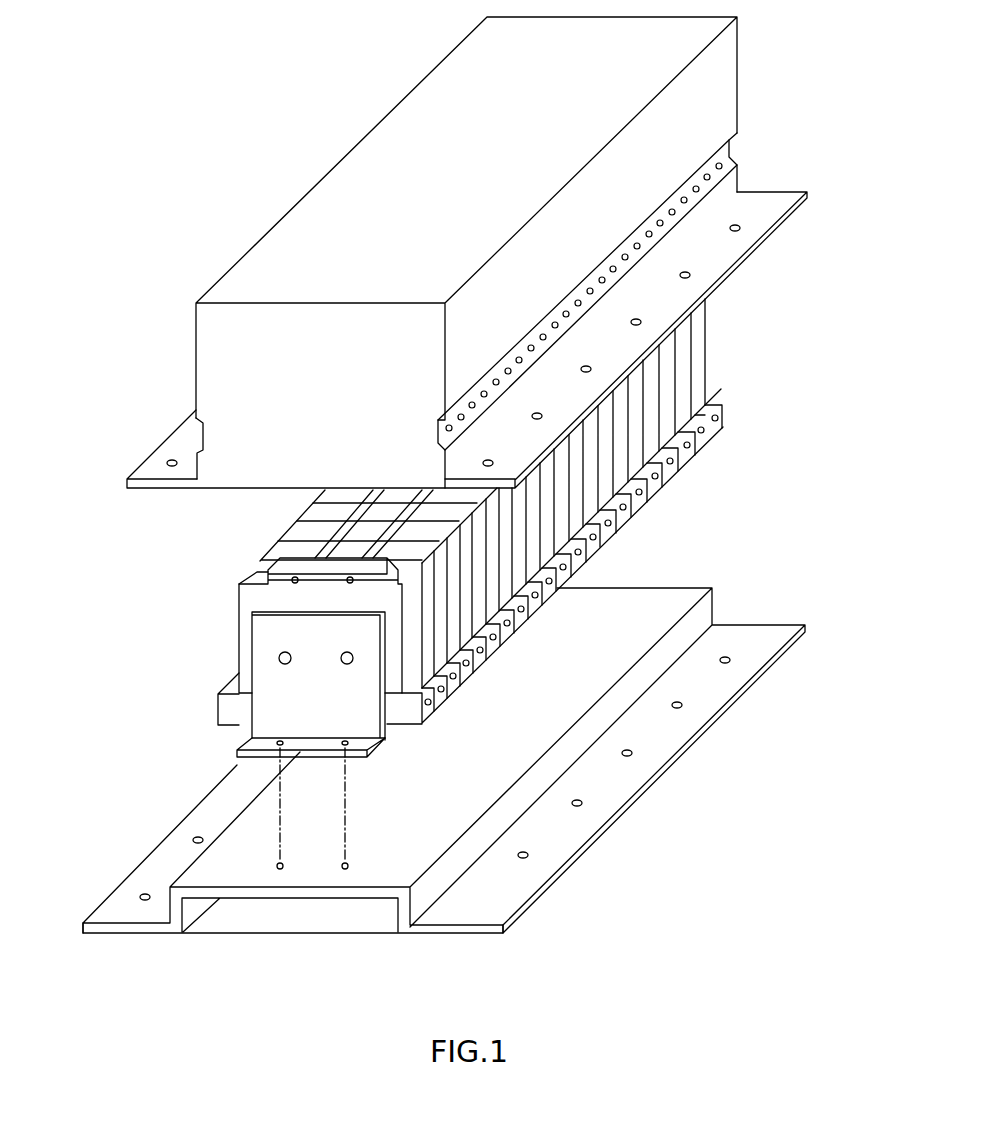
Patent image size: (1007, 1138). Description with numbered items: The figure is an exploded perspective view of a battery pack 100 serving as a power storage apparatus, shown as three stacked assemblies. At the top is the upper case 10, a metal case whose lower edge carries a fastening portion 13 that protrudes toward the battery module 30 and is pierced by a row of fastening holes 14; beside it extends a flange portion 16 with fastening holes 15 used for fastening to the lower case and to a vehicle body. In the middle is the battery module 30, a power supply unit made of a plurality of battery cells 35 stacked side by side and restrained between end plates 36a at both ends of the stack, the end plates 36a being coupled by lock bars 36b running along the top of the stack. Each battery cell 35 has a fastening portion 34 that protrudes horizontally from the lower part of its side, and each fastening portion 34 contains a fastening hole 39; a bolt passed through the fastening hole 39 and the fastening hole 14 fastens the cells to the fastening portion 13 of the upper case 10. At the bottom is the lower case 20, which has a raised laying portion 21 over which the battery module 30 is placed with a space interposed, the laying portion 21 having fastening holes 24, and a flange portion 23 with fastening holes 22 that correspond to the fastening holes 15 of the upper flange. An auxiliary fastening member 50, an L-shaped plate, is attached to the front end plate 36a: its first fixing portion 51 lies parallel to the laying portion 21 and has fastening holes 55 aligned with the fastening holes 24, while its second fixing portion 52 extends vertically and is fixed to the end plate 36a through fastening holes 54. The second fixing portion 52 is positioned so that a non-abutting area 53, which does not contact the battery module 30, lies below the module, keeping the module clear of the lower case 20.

The battery pack 100 is at (290, 80).
The upper case 10 is at (288, 215).
The fastening portion 13 is at (729, 140).
The fastening hole 14 is at (740, 163).
The fastening holes 15 is at (742, 228).
The flange portion 16 is at (762, 200).
The lower case 20 is at (628, 812).
The laying portion 21 is at (383, 888).
The fastening holes 22 is at (195, 840).
The flange portion 23 is at (160, 882).
The fastening holes 24 is at (345, 868).
The battery module 30 is at (630, 514).
The fastening portion 34 is at (705, 447).
The battery cells 35 is at (292, 540).
The end plates 36a is at (697, 337).
The lock bars 36b is at (355, 505).
The fastening hole 39 is at (707, 432).
The auxiliary fastening member 50 is at (252, 628).
The first fixing portion 51 is at (247, 752).
The second fixing portion 52 is at (263, 672).
The non-abutting area 53 is at (388, 738).
The fastening holes 54 is at (282, 653).
The fastening holes 55 is at (270, 750).